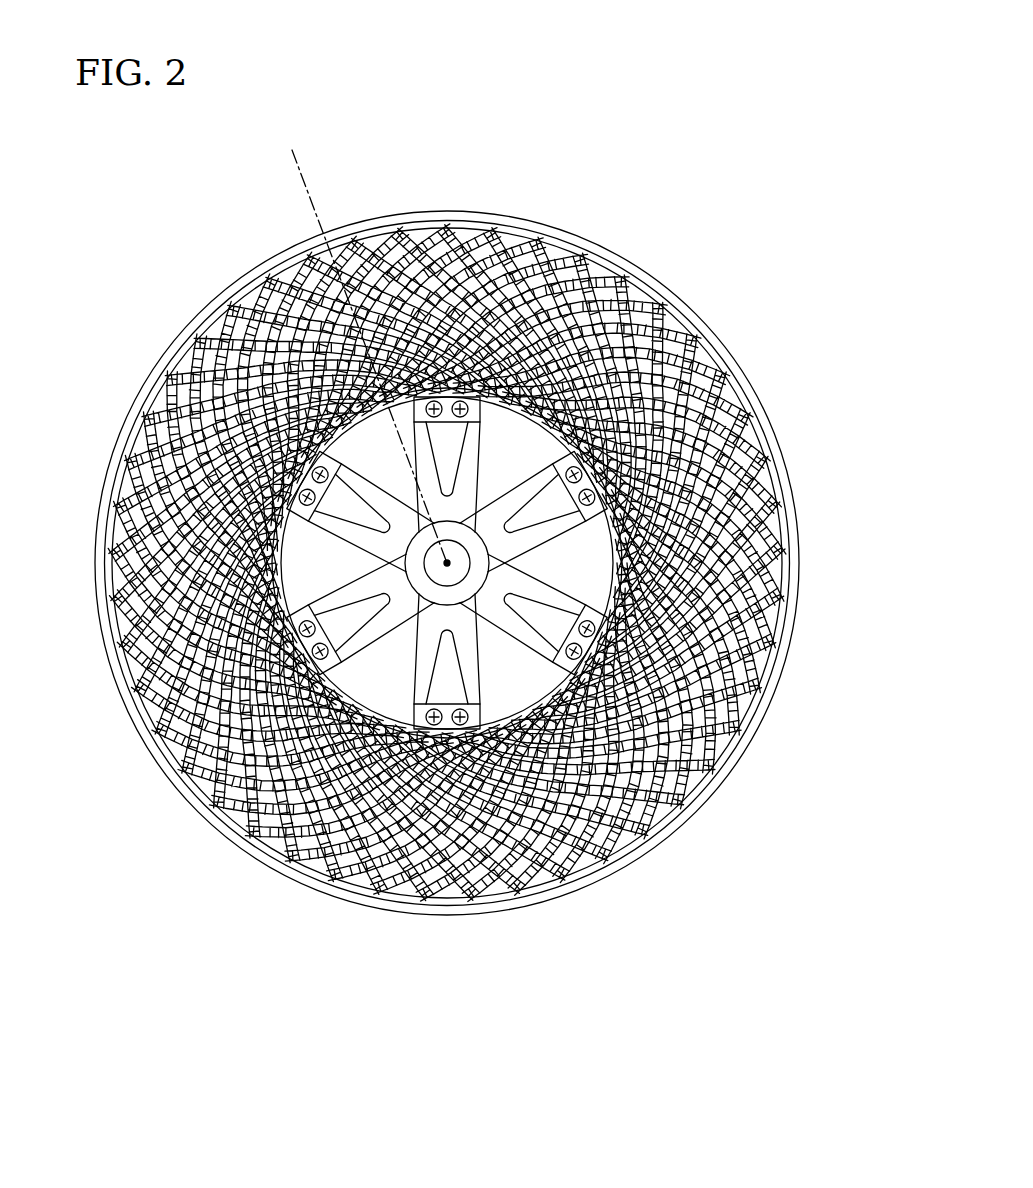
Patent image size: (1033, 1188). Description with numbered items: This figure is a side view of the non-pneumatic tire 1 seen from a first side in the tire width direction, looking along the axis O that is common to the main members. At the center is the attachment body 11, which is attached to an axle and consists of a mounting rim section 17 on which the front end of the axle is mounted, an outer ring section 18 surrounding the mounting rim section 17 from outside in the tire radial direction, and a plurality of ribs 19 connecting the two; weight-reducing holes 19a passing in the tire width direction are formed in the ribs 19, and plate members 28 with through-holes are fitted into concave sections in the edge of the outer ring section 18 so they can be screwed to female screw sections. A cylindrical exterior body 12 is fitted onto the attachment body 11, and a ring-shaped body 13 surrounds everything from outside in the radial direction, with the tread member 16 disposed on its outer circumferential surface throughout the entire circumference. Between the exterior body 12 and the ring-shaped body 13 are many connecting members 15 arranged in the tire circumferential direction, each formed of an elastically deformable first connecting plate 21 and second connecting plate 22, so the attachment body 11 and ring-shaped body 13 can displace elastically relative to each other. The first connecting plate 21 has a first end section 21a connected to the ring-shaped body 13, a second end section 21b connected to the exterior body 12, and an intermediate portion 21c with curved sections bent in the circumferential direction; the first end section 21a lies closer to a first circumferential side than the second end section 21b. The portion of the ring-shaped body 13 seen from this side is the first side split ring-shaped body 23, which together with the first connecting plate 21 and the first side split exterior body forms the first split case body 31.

The non-pneumatic tire 1 is at (740, 142).
The axis O is at (359, 342).
The attachment body 11 is at (587, 624).
The exterior body 12 is at (504, 390).
The ring-shaped body 13 is at (607, 253).
The connecting member 15 is at (414, 626).
The tread member 16 is at (453, 212).
The mounting rim section 17 is at (487, 563).
The outer ring section 18 is at (615, 543).
The ribs 19 is at (578, 695).
The weight-reducing holes 19a is at (453, 733).
The first connecting plate 21 is at (277, 297).
The first end section 21a is at (290, 853).
The second end section 21b is at (272, 605).
The intermediate portion 21c is at (247, 757).
The second connecting plate 22 is at (242, 325).
The first side split ring-shaped body 23 is at (163, 760).
The plate members 28 is at (578, 458).
The first split case body 31 is at (405, 563).